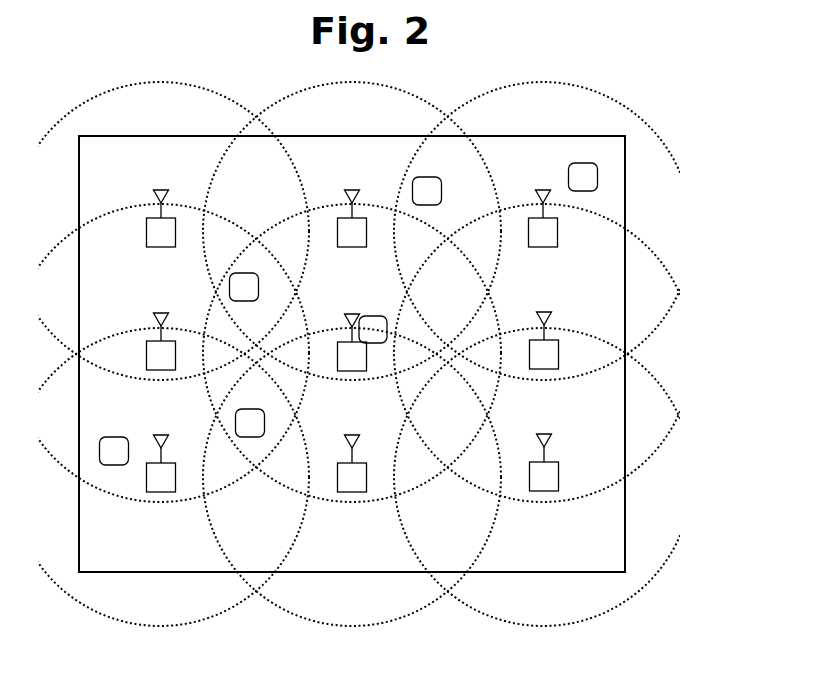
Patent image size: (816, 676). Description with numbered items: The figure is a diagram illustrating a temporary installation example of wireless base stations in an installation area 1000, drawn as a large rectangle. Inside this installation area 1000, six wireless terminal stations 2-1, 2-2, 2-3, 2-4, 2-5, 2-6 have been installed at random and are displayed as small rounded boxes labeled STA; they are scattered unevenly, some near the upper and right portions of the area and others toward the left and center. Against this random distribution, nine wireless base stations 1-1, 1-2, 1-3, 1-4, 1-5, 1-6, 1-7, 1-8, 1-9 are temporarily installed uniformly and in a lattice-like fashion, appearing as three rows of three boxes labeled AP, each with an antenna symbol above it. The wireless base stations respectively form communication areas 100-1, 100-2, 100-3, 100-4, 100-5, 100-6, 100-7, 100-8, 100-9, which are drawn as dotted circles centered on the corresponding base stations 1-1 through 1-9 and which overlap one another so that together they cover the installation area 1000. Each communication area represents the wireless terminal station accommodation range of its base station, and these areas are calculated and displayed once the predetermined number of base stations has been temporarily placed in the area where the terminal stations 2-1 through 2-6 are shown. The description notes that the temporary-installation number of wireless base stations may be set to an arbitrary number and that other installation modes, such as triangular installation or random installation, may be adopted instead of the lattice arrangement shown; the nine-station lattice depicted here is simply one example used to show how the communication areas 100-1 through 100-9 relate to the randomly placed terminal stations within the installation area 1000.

The communication area 100-1 is at (176, 83).
The communication area 100-2 is at (368, 83).
The communication area 100-3 is at (560, 83).
The communication area 100-4 is at (160, 353).
The communication area 100-5 is at (352, 353).
The communication area 100-6 is at (543, 353).
The communication area 100-7 is at (178, 627).
The communication area 100-8 is at (370, 627).
The communication area 100-9 is at (568, 626).
The installation area 1000 is at (526, 136).
The wireless base station 1-1 is at (148, 218).
The wireless base station 1-2 is at (352, 229).
The wireless base station 1-3 is at (556, 218).
The wireless base station 1-4 is at (148, 341).
The wireless base station 1-5 is at (342, 342).
The wireless base station 1-6 is at (556, 340).
The wireless base station 1-7 is at (167, 463).
The wireless base station 1-8 is at (358, 463).
The wireless base station 1-9 is at (556, 462).
The wireless terminal station 2-1 is at (252, 273).
The wireless terminal station 2-2 is at (434, 177).
The wireless terminal station 2-3 is at (589, 163).
The wireless terminal station 2-4 is at (380, 316).
The wireless terminal station 2-5 is at (257, 409).
The wireless terminal station 2-6 is at (121, 437).